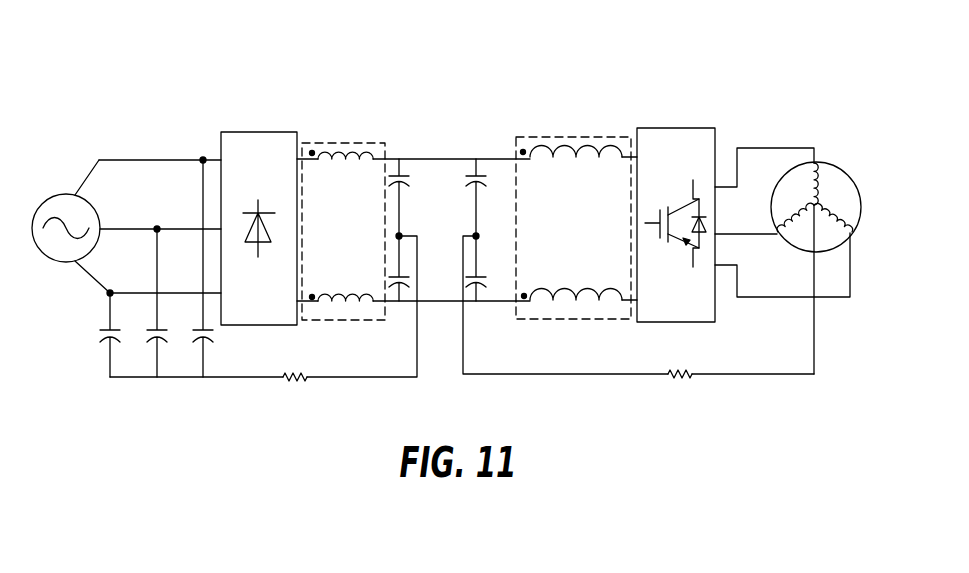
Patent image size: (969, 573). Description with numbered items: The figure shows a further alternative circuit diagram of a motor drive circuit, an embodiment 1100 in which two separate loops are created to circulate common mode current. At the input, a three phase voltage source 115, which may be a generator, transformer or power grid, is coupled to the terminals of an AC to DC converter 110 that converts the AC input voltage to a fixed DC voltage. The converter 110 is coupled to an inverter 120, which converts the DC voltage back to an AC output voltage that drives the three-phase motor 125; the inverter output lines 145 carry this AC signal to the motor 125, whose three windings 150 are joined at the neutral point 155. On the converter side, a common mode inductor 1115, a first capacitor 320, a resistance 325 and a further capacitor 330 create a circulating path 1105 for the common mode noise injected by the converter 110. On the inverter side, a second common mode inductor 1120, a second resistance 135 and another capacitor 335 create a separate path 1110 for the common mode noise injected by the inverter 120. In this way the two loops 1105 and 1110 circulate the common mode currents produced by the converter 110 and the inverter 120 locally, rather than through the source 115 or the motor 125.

The embodiment 1100 is at (468, 159).
The three phase voltage source 115 is at (66, 210).
The capacitor (Cc3) 330 is at (126, 281).
The AC to DC converter 110 is at (259, 209).
The common mode inductor (Lc2) 1115 is at (343, 235).
The capacitor (Cc2) 320 is at (419, 214).
The capacitor (Cc1) 335 is at (489, 214).
The common mode inductor (Lc1) 1120 is at (573, 229).
The inverter 120 is at (676, 206).
The inverter output lines 145 is at (781, 194).
The motor 125 is at (822, 198).
The motor windings 150 is at (820, 199).
The neutral point 155 is at (784, 245).
The circulating path 1105 is at (263, 306).
The resistance (Rc2) 325 is at (309, 376).
The path 1110 is at (638, 305).
The resistance (Rc1) 135 is at (694, 371).